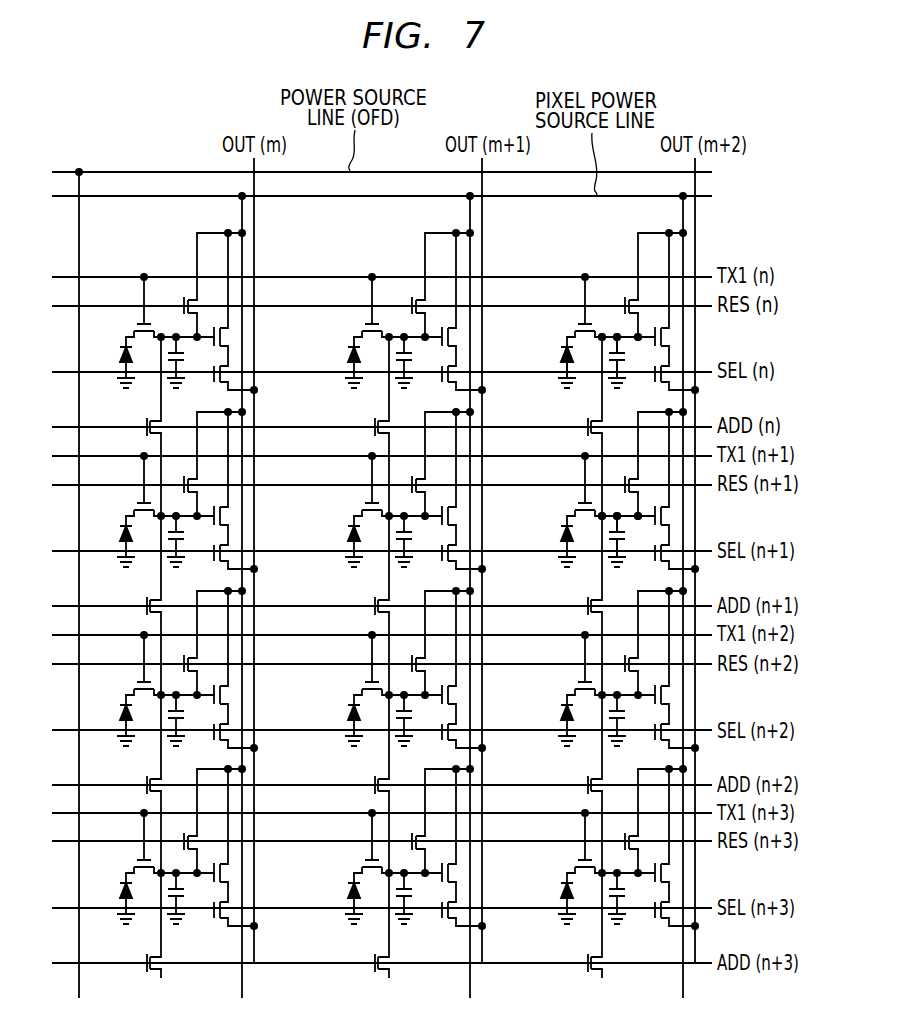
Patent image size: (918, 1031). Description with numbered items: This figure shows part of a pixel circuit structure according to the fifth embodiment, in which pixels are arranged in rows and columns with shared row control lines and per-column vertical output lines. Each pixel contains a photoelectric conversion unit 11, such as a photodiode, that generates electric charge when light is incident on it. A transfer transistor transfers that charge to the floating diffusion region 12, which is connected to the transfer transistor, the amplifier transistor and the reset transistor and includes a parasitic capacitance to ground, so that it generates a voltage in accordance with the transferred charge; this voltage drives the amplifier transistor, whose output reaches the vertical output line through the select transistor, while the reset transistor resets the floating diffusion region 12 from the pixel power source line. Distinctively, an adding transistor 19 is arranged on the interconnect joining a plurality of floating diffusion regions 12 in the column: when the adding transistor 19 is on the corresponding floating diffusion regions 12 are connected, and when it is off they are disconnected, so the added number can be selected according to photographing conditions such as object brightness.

The floating diffusion region 12 is at (603, 334).
The adding transistor 19 is at (588, 419).
The photoelectric conversion unit 11 is at (567, 367).